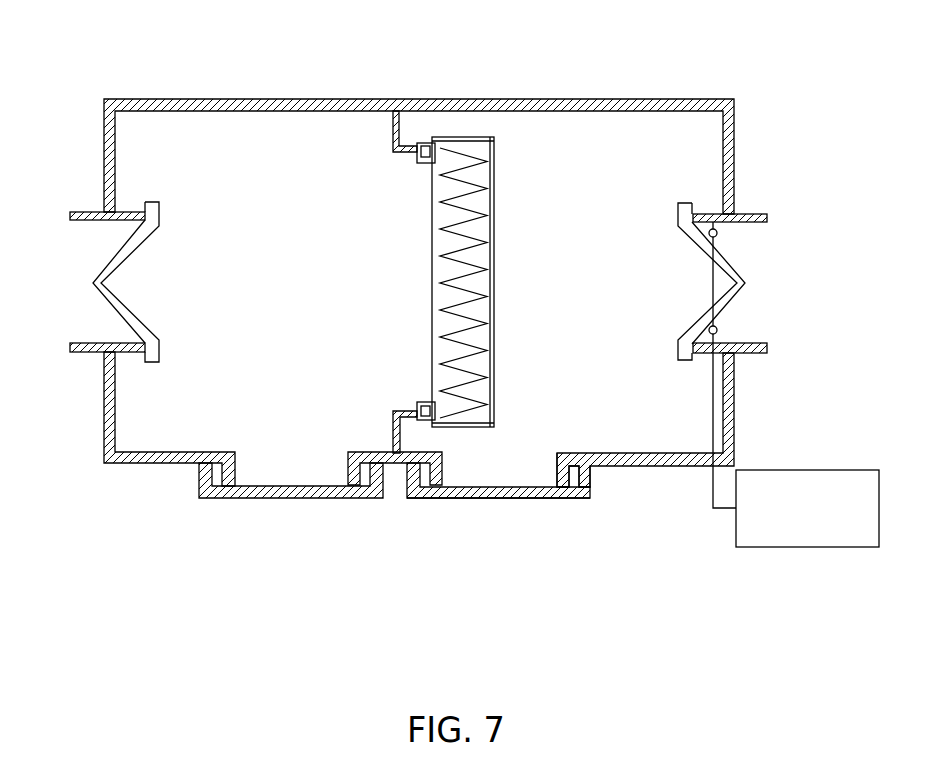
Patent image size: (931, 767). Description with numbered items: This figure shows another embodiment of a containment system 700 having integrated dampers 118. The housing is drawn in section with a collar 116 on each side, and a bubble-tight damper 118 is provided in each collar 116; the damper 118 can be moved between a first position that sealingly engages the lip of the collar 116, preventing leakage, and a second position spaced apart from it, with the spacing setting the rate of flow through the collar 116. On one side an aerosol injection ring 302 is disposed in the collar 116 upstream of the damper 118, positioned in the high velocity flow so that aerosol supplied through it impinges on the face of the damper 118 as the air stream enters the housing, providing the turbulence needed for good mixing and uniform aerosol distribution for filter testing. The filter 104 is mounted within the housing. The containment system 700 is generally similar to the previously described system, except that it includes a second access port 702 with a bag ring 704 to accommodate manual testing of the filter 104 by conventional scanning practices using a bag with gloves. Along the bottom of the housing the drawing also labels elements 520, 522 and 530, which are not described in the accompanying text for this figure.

The containment system 700 is at (276, 60).
The collar 116 is at (88, 212).
The damper 118 is at (120, 262).
The aerosol injection ring 302 is at (713, 222).
The filter 104 is at (496, 193).
The bag ring 704 is at (236, 470).
The second access port 702 is at (318, 450).
The right tray 522 is at (510, 467).
The tray bottom 520 is at (497, 500).
The step 530 is at (545, 462).